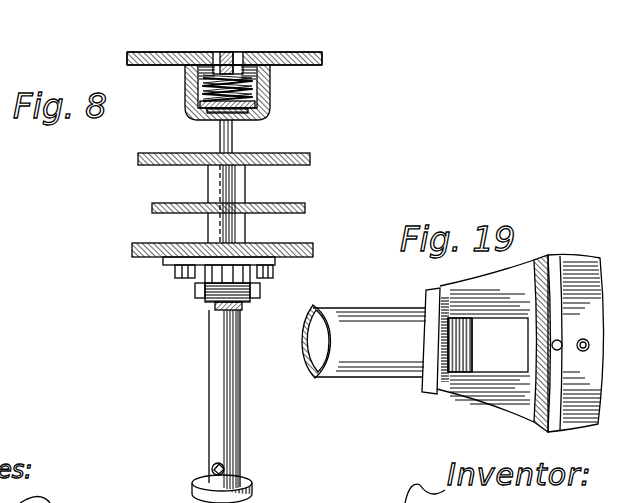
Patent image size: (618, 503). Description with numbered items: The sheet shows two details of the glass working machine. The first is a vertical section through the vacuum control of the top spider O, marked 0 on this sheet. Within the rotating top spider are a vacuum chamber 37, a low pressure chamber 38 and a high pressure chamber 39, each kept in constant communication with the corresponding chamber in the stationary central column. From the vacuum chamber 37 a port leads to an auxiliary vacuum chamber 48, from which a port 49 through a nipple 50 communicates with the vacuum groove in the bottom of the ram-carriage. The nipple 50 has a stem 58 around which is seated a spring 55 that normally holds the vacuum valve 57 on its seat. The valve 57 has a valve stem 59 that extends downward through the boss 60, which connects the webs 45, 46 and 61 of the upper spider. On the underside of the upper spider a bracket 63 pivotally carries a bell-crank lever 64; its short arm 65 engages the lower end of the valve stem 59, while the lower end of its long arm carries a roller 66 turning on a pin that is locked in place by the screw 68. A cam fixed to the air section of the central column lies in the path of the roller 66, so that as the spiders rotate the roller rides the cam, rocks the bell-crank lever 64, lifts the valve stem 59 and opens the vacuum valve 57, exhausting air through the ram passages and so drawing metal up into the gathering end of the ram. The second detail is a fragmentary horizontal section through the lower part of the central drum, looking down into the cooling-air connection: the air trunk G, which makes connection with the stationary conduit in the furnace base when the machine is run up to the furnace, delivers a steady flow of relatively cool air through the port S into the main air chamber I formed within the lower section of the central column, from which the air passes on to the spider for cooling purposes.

In FIG. 8, the supporting plate 0 is at (317, 52).
In FIG. 8, the port 49 is at (227, 52).
In FIG. 8, the nipple 50 is at (214, 53).
In FIG. 8, the stem 58 is at (233, 52).
In FIG. 8, the auxiliary vacuum chamber 48 is at (270, 79).
In FIG. 8, the spring 55 is at (199, 82).
In FIG. 8, the vacuum valve 57 is at (206, 105).
In FIG. 8, the valve stem 59 is at (220, 140).
In FIG. 8, the vacuum chamber 37 is at (268, 135).
In FIG. 8, the web 45 is at (308, 156).
In FIG. 8, the web 46 is at (305, 205).
In FIG. 8, the web 61 is at (313, 255).
In FIG. 8, the boss 60 is at (212, 225).
In FIG. 8, the low pressure chamber 38 is at (278, 184).
In FIG. 8, the high pressure chamber 39 is at (279, 229).
In FIG. 8, the bracket 63 is at (208, 278).
In FIG. 8, the short arm 65 is at (224, 290).
In FIG. 8, the bell-crank lever 64 is at (241, 346).
In FIG. 8, the screw 68 is at (224, 468).
In FIG. 8, the roller 66 is at (250, 489).
In FIG. 19, the air chamber I is at (422, 301).
In FIG. 19, the port S is at (488, 345).
In FIG. 19, the air trunk G is at (470, 340).